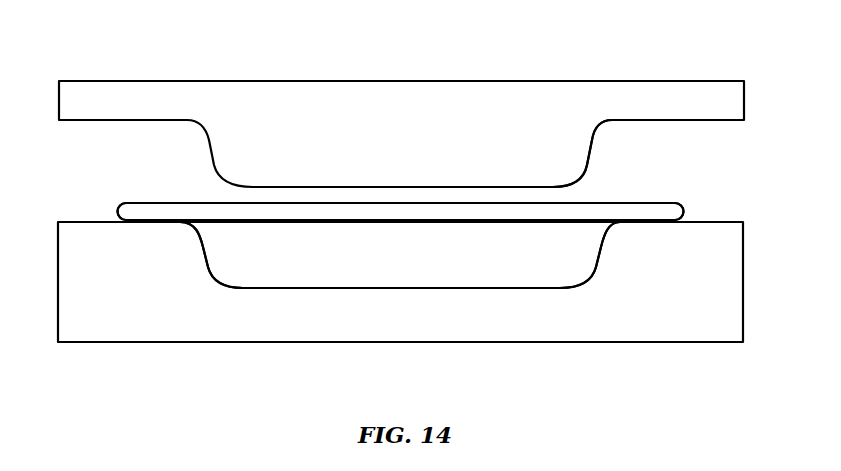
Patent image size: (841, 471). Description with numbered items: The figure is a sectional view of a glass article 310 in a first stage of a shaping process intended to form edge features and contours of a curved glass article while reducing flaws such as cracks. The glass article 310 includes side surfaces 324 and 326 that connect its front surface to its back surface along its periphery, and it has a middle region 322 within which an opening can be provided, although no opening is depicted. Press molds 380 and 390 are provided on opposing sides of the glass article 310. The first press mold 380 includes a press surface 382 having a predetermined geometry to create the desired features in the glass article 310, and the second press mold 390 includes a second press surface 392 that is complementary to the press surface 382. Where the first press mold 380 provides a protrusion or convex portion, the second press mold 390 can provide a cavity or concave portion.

The press mold 380 is at (349, 95).
The press surface 382 is at (579, 144).
The press mold 390 is at (566, 315).
The press surface 392 is at (599, 258).
The glass article 310 is at (119, 211).
The side surface 324 is at (144, 202).
The side surface 326 is at (684, 204).
The middle region 322 is at (405, 222).